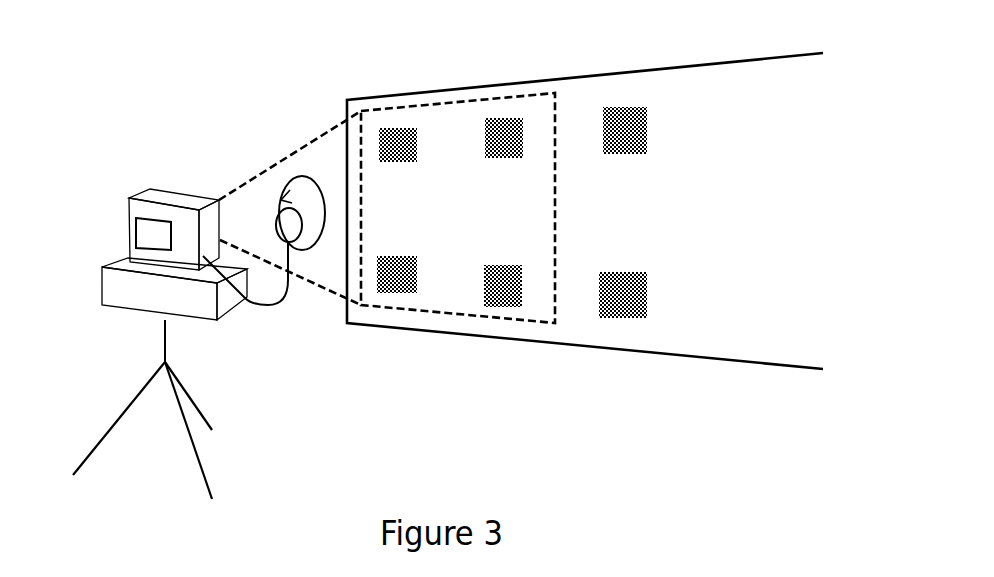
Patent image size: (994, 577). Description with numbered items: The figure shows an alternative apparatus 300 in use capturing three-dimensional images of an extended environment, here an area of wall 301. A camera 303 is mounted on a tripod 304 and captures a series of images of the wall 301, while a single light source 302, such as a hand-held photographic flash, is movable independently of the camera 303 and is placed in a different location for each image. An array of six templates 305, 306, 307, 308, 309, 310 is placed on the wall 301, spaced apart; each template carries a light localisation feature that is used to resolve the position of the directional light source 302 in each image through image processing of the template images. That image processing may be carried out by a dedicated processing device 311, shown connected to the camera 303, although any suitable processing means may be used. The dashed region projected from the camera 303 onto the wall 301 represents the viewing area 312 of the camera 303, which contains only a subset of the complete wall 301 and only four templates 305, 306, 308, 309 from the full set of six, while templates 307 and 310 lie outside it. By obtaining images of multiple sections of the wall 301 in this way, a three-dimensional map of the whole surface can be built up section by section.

The alternative apparatus 300 is at (196, 148).
The wall 301 is at (572, 122).
The light source 302 is at (305, 213).
The camera 303 is at (150, 211).
The tripod 304 is at (168, 365).
The template 305 is at (397, 150).
The template 306 is at (505, 147).
The template 307 is at (623, 133).
The template 308 is at (398, 267).
The template 309 is at (502, 282).
The template 310 is at (622, 288).
The processing device 311 is at (152, 295).
The viewing area 312 is at (448, 157).